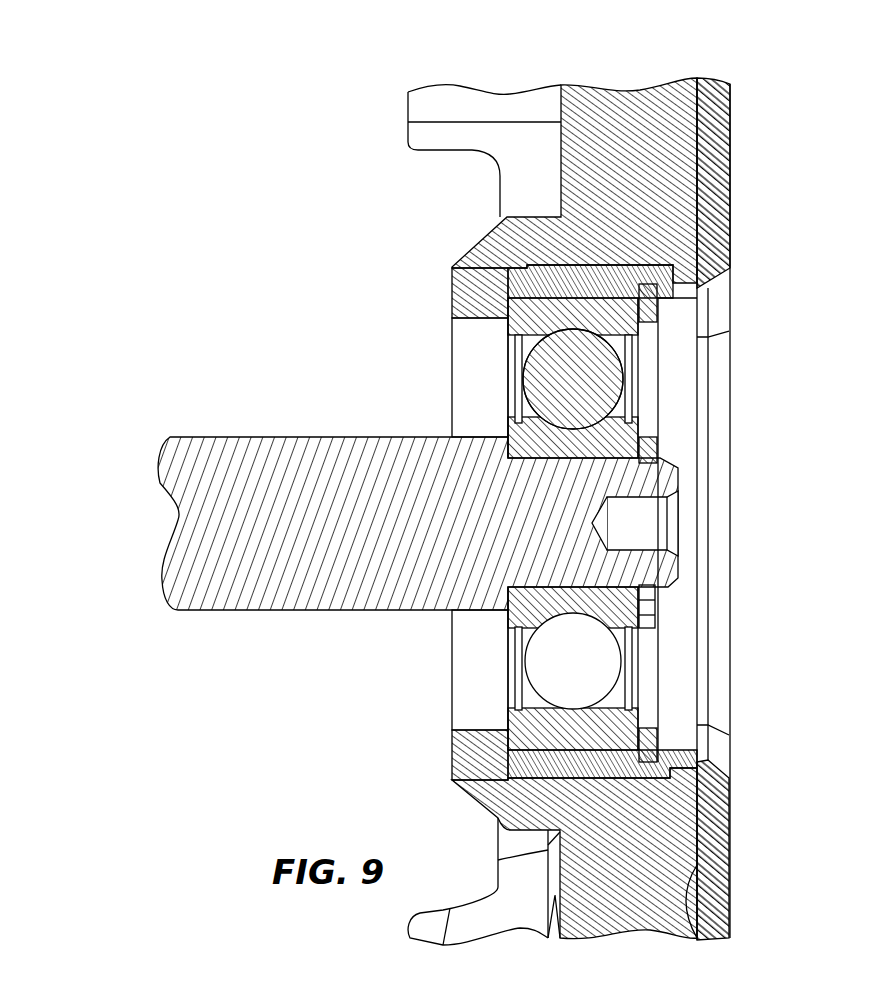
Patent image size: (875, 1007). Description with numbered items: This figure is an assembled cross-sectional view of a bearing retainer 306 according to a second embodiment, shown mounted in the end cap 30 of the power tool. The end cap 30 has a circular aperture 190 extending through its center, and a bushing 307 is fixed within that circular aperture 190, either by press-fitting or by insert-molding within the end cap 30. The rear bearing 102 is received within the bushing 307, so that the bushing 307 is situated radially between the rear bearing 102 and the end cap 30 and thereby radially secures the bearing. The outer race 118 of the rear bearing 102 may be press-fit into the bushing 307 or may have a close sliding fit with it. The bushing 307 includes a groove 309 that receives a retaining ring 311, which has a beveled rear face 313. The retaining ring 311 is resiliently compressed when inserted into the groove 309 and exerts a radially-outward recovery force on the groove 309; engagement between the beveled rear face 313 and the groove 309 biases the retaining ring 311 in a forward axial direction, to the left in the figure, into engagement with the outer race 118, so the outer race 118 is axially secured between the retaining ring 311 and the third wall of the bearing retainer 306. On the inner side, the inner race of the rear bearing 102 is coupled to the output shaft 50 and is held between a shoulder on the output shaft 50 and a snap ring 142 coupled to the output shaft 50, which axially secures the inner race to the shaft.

The end cap 30 is at (625, 120).
The output shaft 50 is at (268, 463).
The rear bearing 102 is at (508, 366).
The outer race 118 is at (452, 267).
The snap ring 142 is at (657, 441).
The circular aperture 190 is at (545, 765).
The bearing retainer 306 is at (332, 729).
The bushing 307 is at (627, 262).
The groove 309 is at (700, 762).
The retaining ring 311 is at (648, 340).
The beveled rear face 313 is at (657, 291).